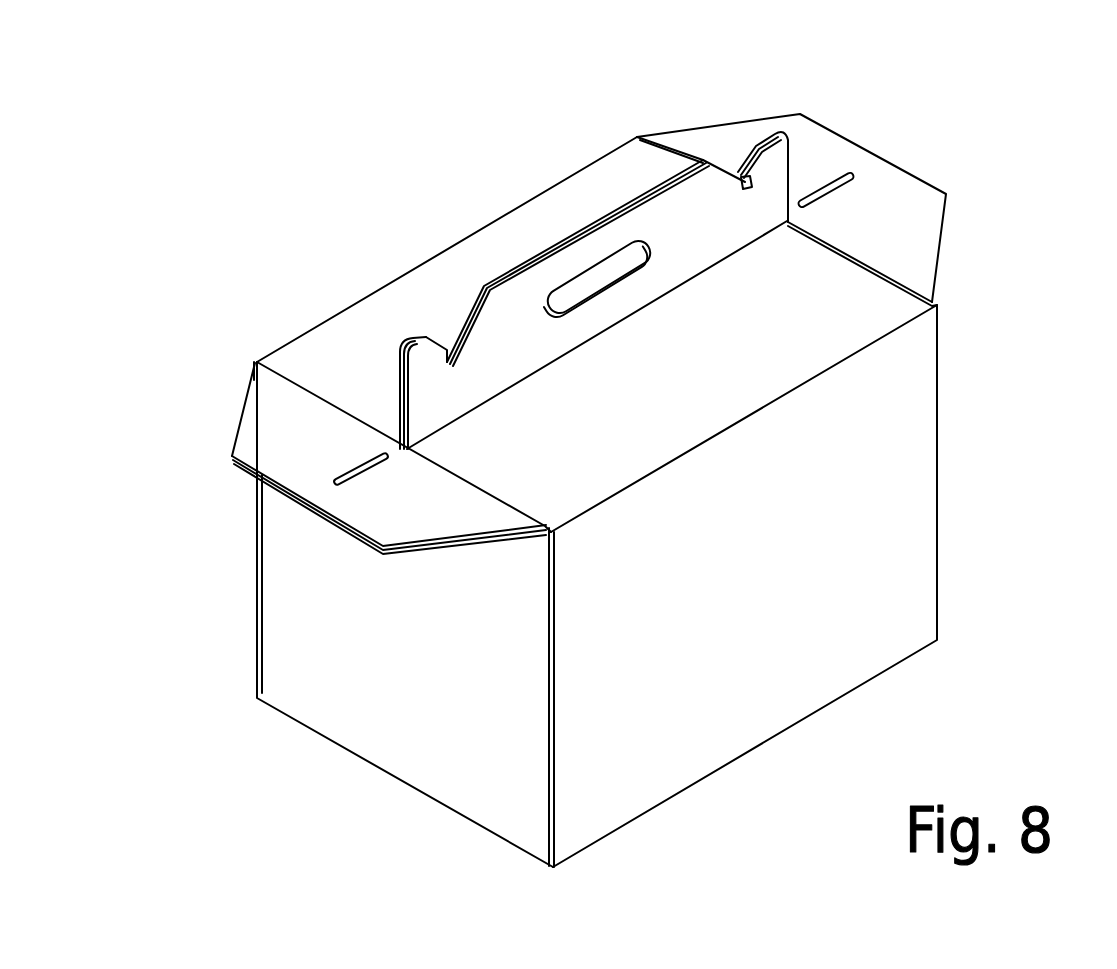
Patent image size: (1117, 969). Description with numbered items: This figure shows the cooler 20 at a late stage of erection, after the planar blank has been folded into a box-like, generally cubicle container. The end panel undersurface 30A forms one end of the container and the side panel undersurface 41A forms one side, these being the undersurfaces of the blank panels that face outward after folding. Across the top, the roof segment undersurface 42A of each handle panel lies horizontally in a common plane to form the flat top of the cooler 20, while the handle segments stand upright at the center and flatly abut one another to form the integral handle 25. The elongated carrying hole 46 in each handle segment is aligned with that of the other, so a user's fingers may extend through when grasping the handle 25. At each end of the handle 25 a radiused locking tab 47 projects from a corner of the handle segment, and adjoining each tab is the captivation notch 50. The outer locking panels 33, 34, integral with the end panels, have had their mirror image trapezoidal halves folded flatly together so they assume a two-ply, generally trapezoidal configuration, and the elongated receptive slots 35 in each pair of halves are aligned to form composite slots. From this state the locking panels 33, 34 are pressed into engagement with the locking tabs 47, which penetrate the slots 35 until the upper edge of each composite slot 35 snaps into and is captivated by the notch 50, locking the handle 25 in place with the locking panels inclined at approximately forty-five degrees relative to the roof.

The cooler 20 is at (372, 113).
The handle 25 is at (575, 216).
The end panel undersurface 30A is at (473, 785).
The outer locking panel 33 is at (282, 500).
The outer locking panel 34 is at (957, 280).
The receptive slot 35 is at (835, 196).
The side panel undersurface 41A is at (895, 540).
The roof segment undersurface 42A is at (335, 357).
The carrying hole 46 is at (583, 283).
The locking tab 47 is at (422, 367).
The captivation notch 50 is at (745, 186).